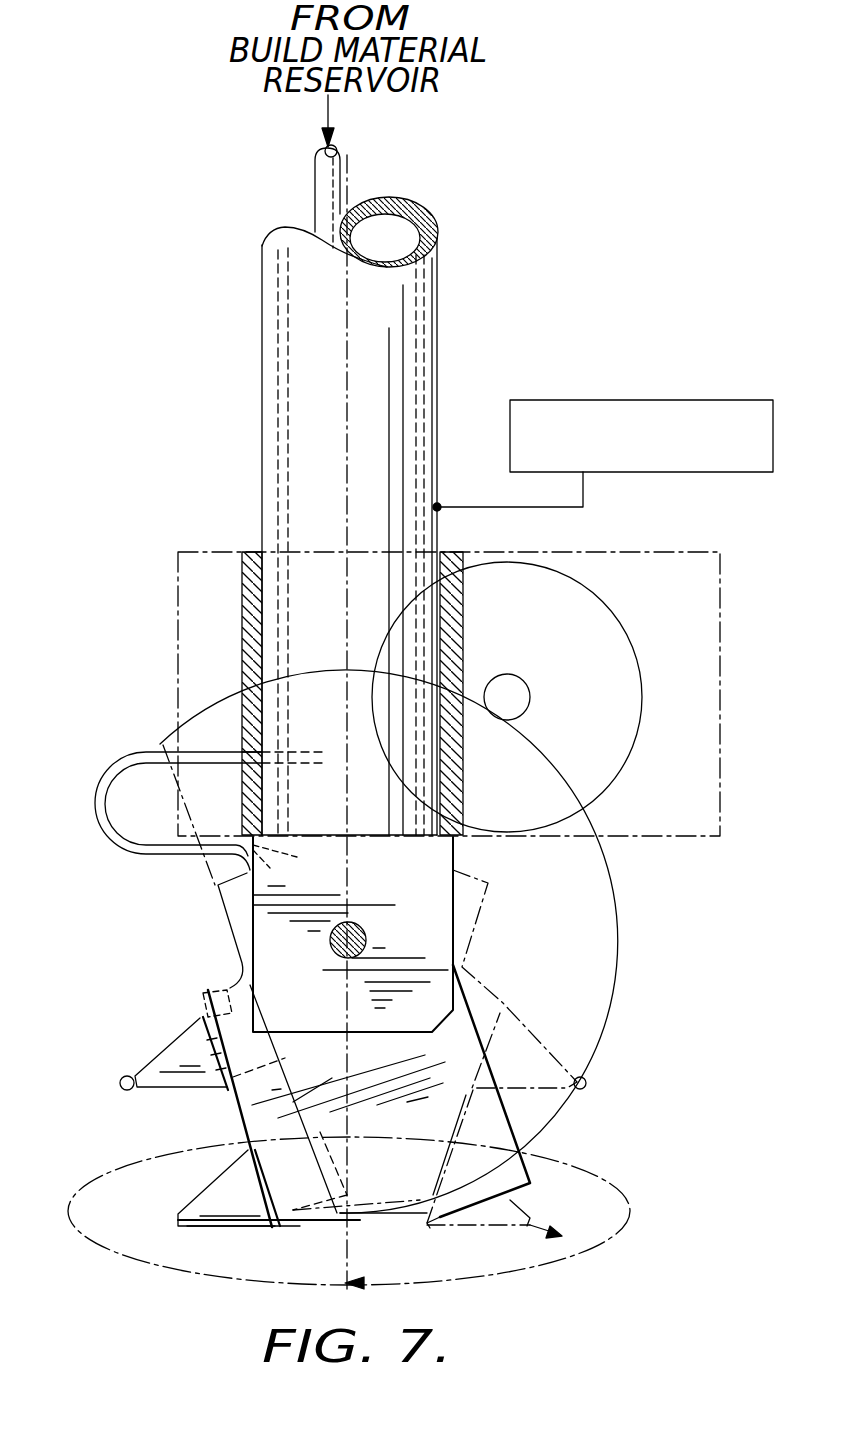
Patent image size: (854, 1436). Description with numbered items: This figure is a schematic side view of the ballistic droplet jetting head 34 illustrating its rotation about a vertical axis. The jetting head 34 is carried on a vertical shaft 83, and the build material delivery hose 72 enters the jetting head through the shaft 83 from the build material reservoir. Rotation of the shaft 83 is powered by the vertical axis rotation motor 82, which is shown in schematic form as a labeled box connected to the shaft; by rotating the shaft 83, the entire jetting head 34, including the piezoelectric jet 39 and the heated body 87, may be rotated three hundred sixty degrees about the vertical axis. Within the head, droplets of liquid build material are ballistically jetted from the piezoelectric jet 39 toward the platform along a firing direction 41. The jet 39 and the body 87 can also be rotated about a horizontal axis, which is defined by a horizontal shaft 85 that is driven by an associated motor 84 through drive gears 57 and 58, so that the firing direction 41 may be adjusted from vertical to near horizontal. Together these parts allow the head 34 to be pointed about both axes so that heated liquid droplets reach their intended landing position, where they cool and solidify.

The ballistic jetting head 34 is at (116, 607).
The piezoelectric jet 39 is at (208, 1226).
The firing direction 41 is at (160, 1196).
The drive gear 57 is at (527, 683).
The drive gear 58 is at (565, 780).
The build material delivery hose 72 is at (343, 164).
The vertical axis rotation motor 82 is at (652, 400).
The shaft 83 is at (423, 337).
The motor 84 is at (622, 770).
The horizontal shaft 85 is at (366, 930).
The body 87 is at (170, 1052).